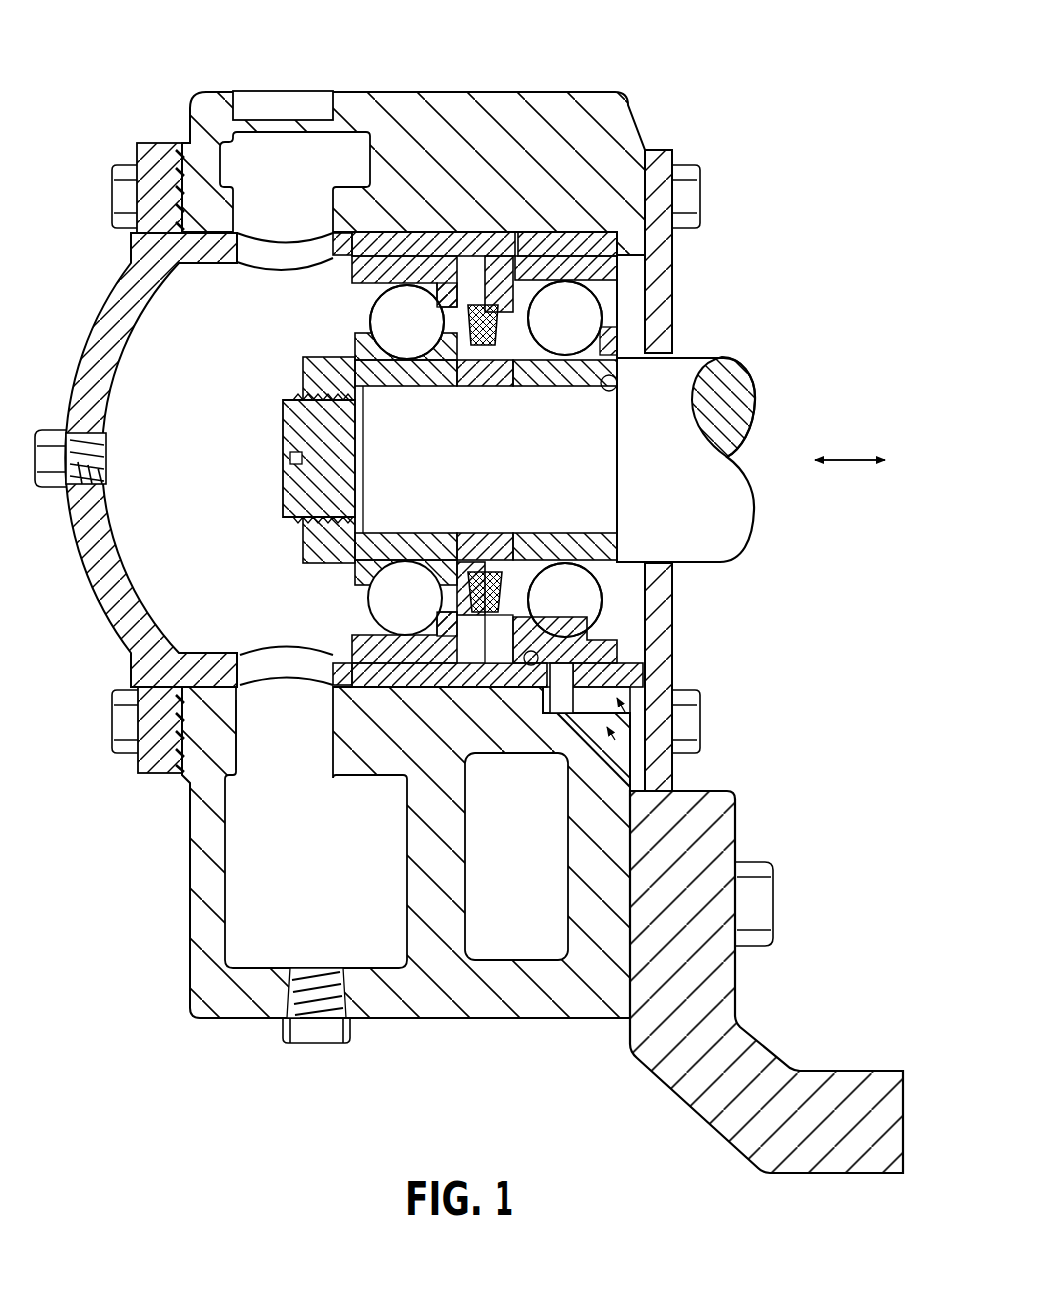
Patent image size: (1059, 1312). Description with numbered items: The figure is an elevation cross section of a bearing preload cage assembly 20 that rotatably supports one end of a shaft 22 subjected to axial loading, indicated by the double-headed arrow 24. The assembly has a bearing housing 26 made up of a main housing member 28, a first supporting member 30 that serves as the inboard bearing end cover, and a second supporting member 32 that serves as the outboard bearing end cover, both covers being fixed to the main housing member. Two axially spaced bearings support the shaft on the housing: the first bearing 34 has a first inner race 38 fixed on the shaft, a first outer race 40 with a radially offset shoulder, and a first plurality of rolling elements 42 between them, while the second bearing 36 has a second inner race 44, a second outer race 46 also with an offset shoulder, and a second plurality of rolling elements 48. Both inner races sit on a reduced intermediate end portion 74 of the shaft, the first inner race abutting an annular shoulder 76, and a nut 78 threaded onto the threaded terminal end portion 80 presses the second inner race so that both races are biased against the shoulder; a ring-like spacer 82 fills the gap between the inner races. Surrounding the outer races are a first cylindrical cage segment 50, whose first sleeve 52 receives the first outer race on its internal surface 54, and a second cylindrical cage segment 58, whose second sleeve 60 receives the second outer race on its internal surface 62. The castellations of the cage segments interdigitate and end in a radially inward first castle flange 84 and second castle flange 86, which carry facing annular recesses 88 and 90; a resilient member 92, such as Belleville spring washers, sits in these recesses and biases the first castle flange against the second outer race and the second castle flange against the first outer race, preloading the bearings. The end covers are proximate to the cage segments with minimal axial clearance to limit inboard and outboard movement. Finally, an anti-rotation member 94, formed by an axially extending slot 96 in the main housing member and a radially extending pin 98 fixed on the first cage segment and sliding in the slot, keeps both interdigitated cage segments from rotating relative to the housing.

The bearing preload cage assembly 20 is at (714, 57).
The shaft 22 is at (740, 398).
The double-headed arrow 24 is at (855, 462).
The bearing housing 26 is at (458, 1022).
The main housing member 28 is at (460, 102).
The first supporting member 30 is at (665, 624).
The second supporting member 32 is at (118, 605).
The first bearing 34 is at (557, 240).
The second bearing 36 is at (384, 240).
The first inner race 38 is at (580, 538).
The first outer race 40 is at (617, 273).
The first plurality of rolling elements 42 is at (585, 308).
The second inner race 44 is at (400, 538).
The second outer race 46 is at (380, 275).
The second plurality of rolling elements 48 is at (370, 318).
The first cylindrical cage segment 50 is at (613, 690).
The first sleeve 52 is at (507, 672).
The internal surface 54 is at (528, 667).
The second cylindrical cage segment 58 is at (347, 243).
The second sleeve 60 is at (387, 693).
The internal surface 62 is at (437, 255).
The reduced intermediate end portion 74 is at (532, 465).
The annular shoulder 76 is at (617, 392).
The nut 78 is at (310, 548).
The threaded terminal end portion 80 is at (305, 430).
The ring-like spacer 82 is at (507, 382).
The first castle flange 84 is at (467, 623).
The second castle flange 86 is at (565, 318).
The annular recess 88 is at (497, 598).
The annular recess 90 is at (443, 323).
The resilient member 92 is at (487, 372).
The anti-rotation member 94 is at (647, 766).
The axially extending slot 96 is at (605, 680).
The radially extending pin 98 is at (558, 677).